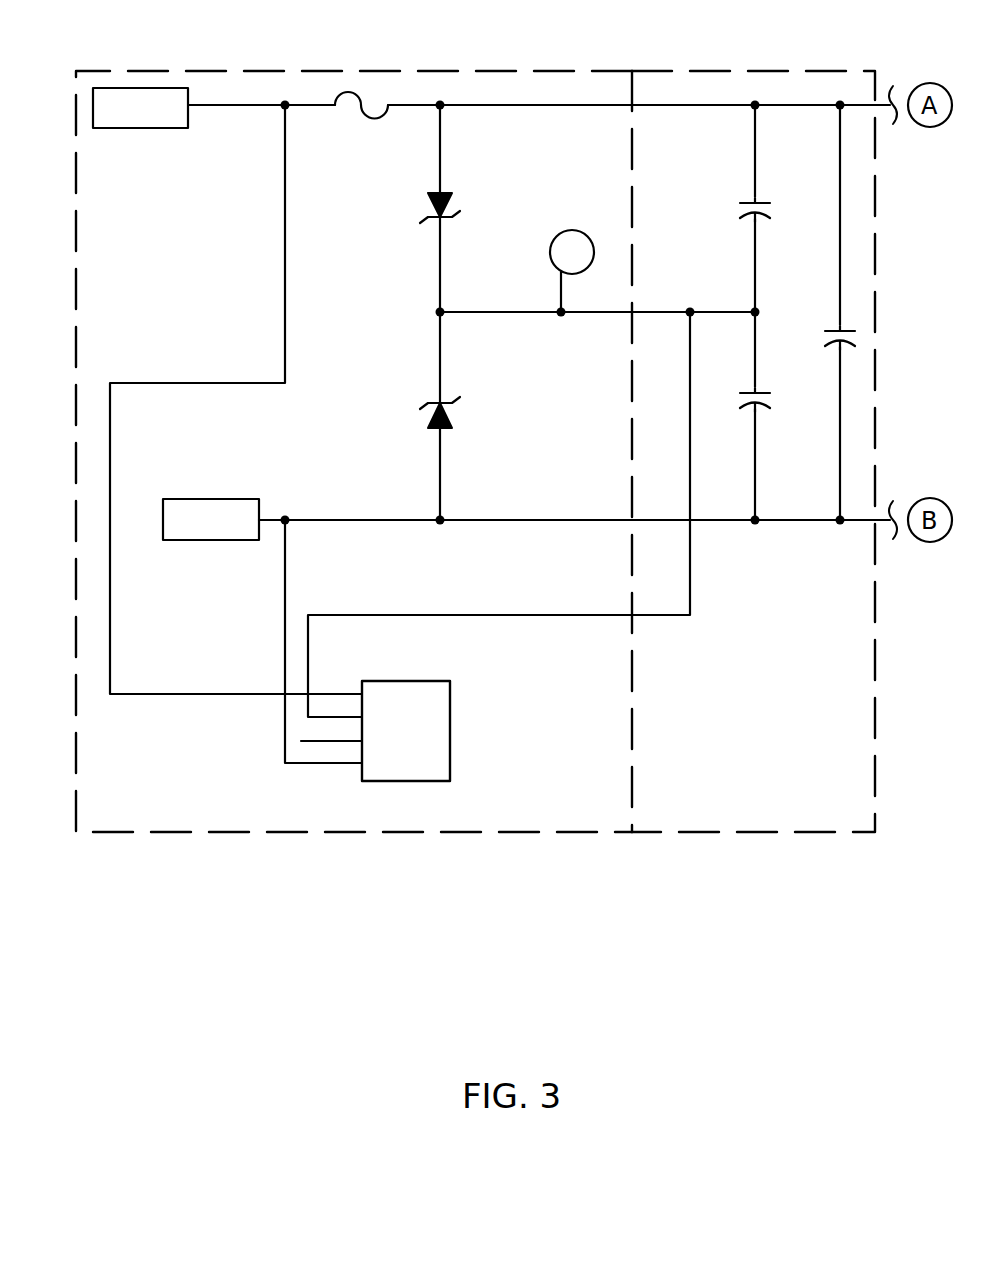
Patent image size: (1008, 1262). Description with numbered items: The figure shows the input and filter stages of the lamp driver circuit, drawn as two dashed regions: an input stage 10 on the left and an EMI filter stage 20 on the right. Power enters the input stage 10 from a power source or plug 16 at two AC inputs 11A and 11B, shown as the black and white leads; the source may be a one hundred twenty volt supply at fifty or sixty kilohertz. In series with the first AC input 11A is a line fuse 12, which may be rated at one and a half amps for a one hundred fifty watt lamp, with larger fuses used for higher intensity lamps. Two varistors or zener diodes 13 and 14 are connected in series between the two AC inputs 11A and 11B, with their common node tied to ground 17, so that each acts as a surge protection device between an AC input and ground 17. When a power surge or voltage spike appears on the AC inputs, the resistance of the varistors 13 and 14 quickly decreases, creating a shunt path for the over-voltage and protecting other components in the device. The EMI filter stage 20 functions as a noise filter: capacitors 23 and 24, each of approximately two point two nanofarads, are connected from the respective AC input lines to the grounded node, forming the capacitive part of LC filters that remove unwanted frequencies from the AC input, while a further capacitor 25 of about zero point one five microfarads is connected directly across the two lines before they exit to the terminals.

The input stage 10 is at (305, 68).
The EMI filter stage 20 is at (722, 68).
The AC input 11A is at (189, 131).
The AC input 11B is at (224, 546).
The line fuse 12 is at (361, 124).
The varistor 13 is at (421, 222).
The varistor 14 is at (421, 400).
The plug 16 is at (452, 731).
The ground 17 is at (565, 254).
The capacitor 23 is at (778, 200).
The capacitor 24 is at (778, 411).
The capacitor 25 is at (819, 330).